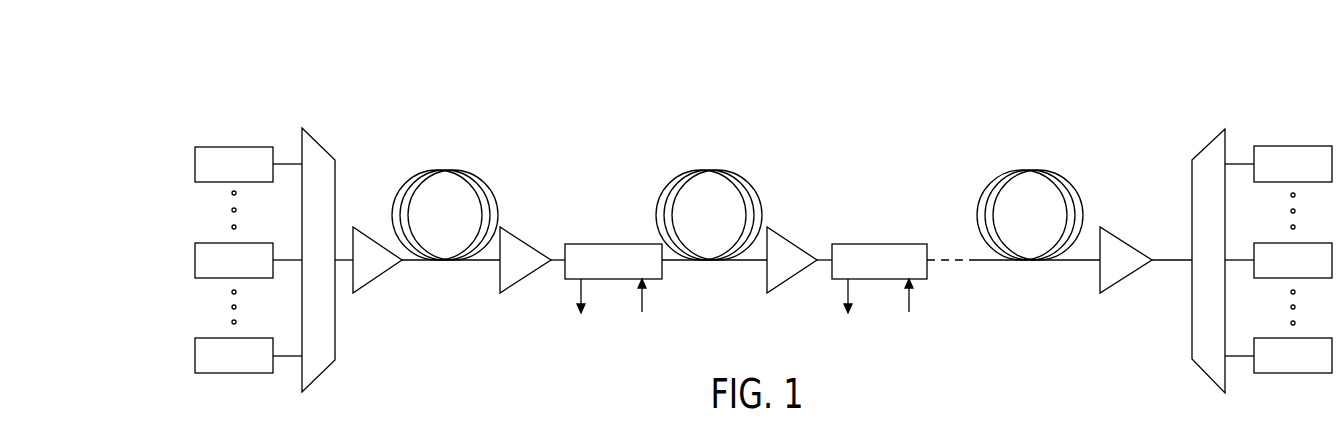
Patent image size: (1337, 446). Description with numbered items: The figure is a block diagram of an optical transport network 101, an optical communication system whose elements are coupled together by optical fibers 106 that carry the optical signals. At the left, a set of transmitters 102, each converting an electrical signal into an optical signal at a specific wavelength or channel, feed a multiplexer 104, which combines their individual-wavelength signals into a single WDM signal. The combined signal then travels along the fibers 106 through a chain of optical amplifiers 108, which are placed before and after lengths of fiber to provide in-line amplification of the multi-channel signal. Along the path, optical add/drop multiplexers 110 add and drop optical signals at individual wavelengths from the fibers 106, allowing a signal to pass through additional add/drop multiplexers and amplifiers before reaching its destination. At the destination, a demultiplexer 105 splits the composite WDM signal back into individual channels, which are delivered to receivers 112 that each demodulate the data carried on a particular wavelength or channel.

The optical transport network 101 is at (261, 57).
The transmitter 102 is at (218, 147).
The multiplexer 104 is at (314, 138).
The demultiplexer 105 is at (1211, 140).
The optical fiber 106 is at (445, 170).
The optical amplifier 108 is at (372, 281).
The optical add/drop multiplexer 110 is at (601, 244).
The receiver 112 is at (1308, 146).